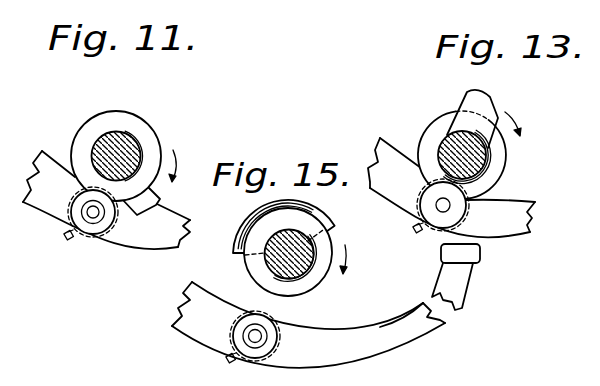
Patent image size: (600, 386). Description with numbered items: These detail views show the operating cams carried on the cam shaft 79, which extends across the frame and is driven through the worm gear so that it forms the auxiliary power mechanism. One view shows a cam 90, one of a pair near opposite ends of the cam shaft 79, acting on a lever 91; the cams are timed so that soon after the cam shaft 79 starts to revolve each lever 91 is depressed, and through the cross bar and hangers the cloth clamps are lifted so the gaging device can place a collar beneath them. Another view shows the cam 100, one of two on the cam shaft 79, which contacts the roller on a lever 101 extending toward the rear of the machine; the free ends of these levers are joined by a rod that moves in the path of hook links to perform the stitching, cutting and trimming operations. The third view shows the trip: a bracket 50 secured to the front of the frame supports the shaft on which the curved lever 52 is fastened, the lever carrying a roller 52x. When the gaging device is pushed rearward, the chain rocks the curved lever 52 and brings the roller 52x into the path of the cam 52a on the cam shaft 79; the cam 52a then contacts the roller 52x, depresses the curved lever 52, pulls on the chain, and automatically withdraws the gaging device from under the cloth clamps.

In FIG. 11, the cam shaft 79 is at (128, 155).
In FIG. 15, the cam shaft 79 is at (300, 266).
In FIG. 13, the cam shaft 79 is at (478, 162).
In FIG. 11, the cam 90 is at (156, 196).
In FIG. 11, the lever 91 is at (152, 238).
In FIG. 13, the cam 100 is at (493, 108).
In FIG. 13, the lever 101 is at (520, 229).
In FIG. 15, the bracket 50 is at (195, 332).
In FIG. 15, the curved lever 52 is at (386, 330).
In FIG. 15, the cam 52a is at (325, 218).
In FIG. 15, the roller 52x is at (268, 331).